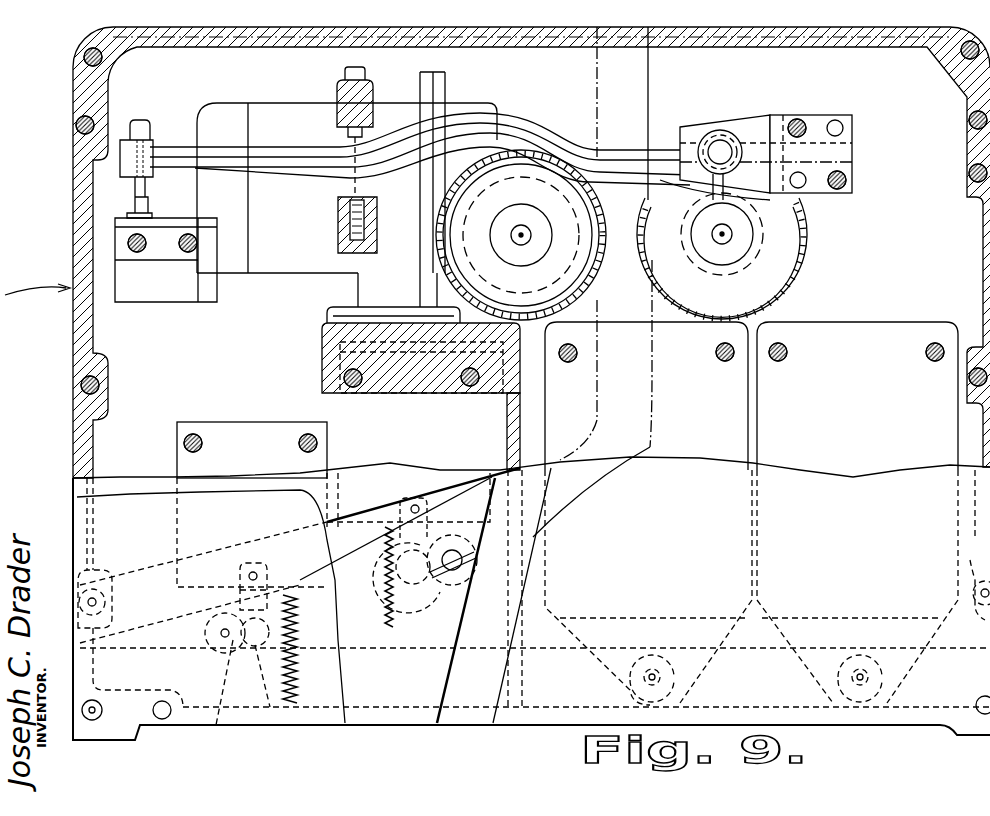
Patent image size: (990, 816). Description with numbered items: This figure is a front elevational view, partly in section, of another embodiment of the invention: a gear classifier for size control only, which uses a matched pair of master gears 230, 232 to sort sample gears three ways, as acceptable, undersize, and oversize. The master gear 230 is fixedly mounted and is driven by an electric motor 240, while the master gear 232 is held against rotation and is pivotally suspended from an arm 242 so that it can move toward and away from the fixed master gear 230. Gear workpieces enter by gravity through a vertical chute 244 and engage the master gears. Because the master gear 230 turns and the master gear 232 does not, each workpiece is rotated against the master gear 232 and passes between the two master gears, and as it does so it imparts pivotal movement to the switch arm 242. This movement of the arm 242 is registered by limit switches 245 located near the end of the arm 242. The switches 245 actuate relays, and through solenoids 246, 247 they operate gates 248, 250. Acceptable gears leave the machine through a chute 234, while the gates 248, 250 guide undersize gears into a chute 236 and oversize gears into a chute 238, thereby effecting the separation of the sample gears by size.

The master gear 230 is at (597, 252).
The master gear 232 is at (596, 214).
The chute 234 is at (134, 573).
The chute 236 is at (440, 723).
The chute 238 is at (213, 730).
The electric motor 240 is at (312, 222).
The arm 242 is at (313, 128).
The vertical chute 244 is at (656, 74).
The limit switches 245 is at (118, 200).
The solenoid 246 is at (433, 421).
The solenoid 247 is at (268, 456).
The gate 248 is at (217, 660).
The gate 250 is at (445, 494).